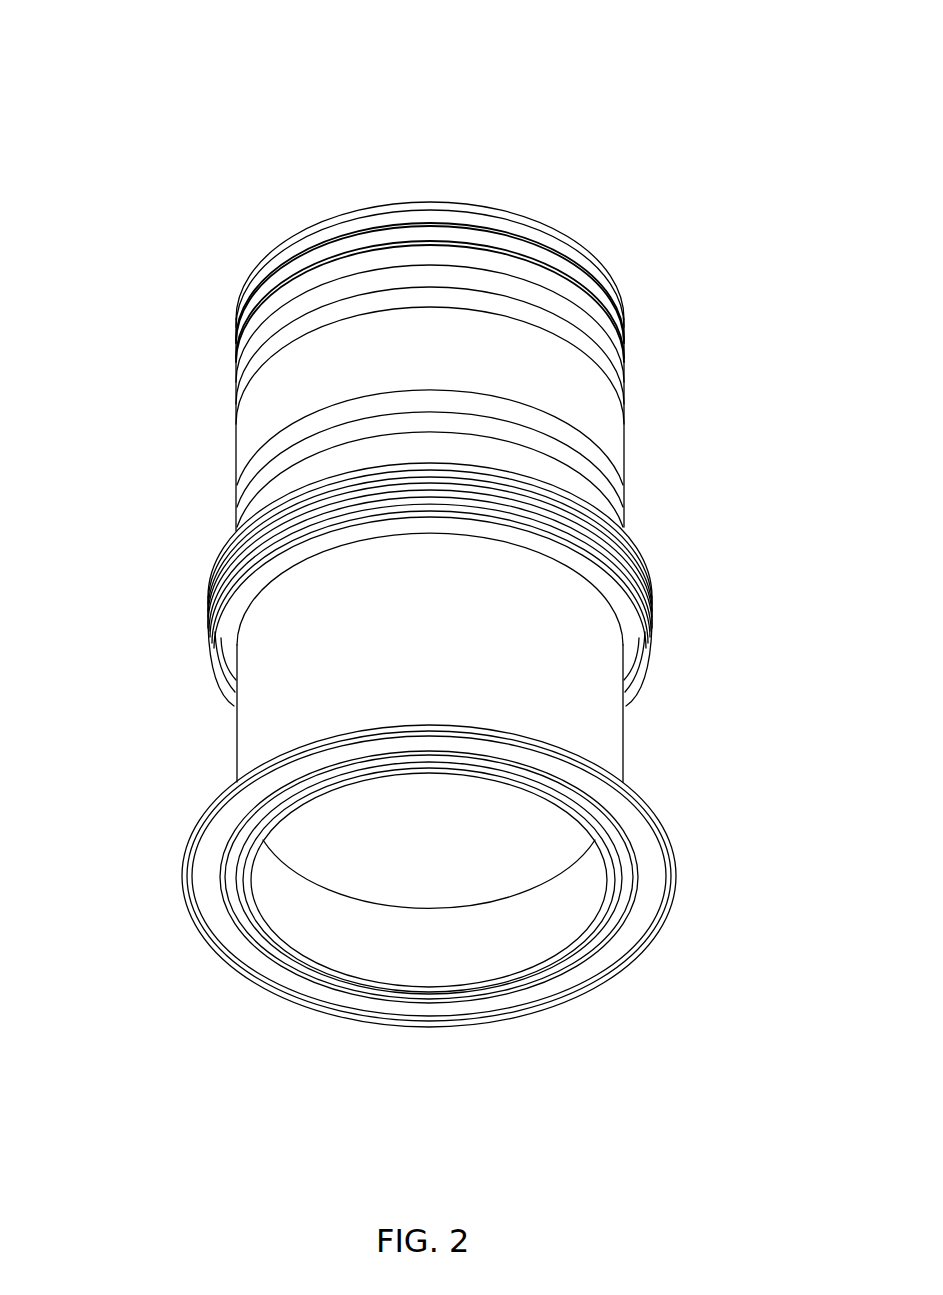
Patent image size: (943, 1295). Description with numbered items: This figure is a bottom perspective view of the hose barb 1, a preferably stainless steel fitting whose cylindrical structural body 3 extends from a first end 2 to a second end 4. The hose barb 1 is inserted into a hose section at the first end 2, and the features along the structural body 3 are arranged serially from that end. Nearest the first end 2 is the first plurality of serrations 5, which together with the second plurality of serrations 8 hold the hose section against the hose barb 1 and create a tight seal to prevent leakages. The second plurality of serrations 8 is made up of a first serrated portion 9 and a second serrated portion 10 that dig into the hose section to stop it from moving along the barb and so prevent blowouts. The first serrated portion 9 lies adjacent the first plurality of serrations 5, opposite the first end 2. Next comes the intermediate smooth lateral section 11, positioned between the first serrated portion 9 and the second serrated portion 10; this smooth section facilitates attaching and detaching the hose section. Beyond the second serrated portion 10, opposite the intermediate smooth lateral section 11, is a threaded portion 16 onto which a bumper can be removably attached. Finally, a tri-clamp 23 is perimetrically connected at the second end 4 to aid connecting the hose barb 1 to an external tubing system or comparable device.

The hose barb 1 is at (681, 49).
The first end 2 is at (387, 204).
The structural body 3 is at (252, 728).
The second end 4 is at (618, 972).
The first plurality of serrations 5 is at (586, 254).
The second plurality of serrations 8 is at (620, 342).
The first serrated portion 9 is at (174, 370).
The second serrated portion 10 is at (688, 513).
The intermediate smooth lateral section 11 is at (452, 367).
The threaded portion 16 is at (648, 610).
The tri-clamp 23 is at (197, 917).